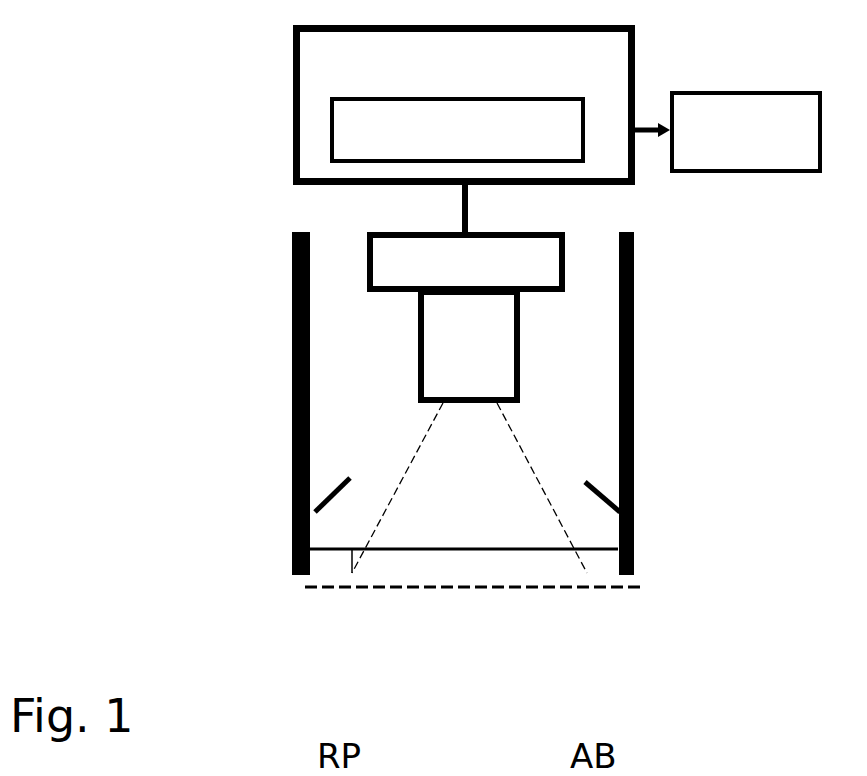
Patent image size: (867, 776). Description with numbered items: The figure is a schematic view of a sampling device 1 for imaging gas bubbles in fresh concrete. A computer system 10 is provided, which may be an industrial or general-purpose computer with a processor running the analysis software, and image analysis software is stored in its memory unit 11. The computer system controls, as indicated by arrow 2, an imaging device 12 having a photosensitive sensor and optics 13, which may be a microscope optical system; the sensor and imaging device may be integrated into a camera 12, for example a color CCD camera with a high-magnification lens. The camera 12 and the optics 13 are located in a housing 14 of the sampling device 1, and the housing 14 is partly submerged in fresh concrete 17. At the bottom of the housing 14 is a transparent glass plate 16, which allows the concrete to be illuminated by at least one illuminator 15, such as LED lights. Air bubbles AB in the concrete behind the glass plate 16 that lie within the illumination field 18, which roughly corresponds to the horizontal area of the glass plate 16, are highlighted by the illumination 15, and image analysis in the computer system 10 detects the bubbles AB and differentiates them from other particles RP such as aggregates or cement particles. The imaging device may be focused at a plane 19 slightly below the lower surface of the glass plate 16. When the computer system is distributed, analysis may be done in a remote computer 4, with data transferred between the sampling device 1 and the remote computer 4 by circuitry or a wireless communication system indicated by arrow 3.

The sampling device 1 is at (172, 203).
The control arrow 2 is at (468, 207).
The wireless communication system arrow 3 is at (645, 127).
The remote computer 4 is at (708, 98).
The computer system 10 is at (293, 50).
The memory unit 11 is at (330, 137).
The imaging device (camera) 12 is at (367, 231).
The optics 13 is at (418, 335).
The housing 14 is at (636, 390).
The illuminator 15 is at (347, 468).
The transparent glass plate 16 is at (418, 555).
The fresh concrete 17 is at (267, 420).
The illumination field 18 is at (450, 575).
The focus plane 19 is at (600, 586).